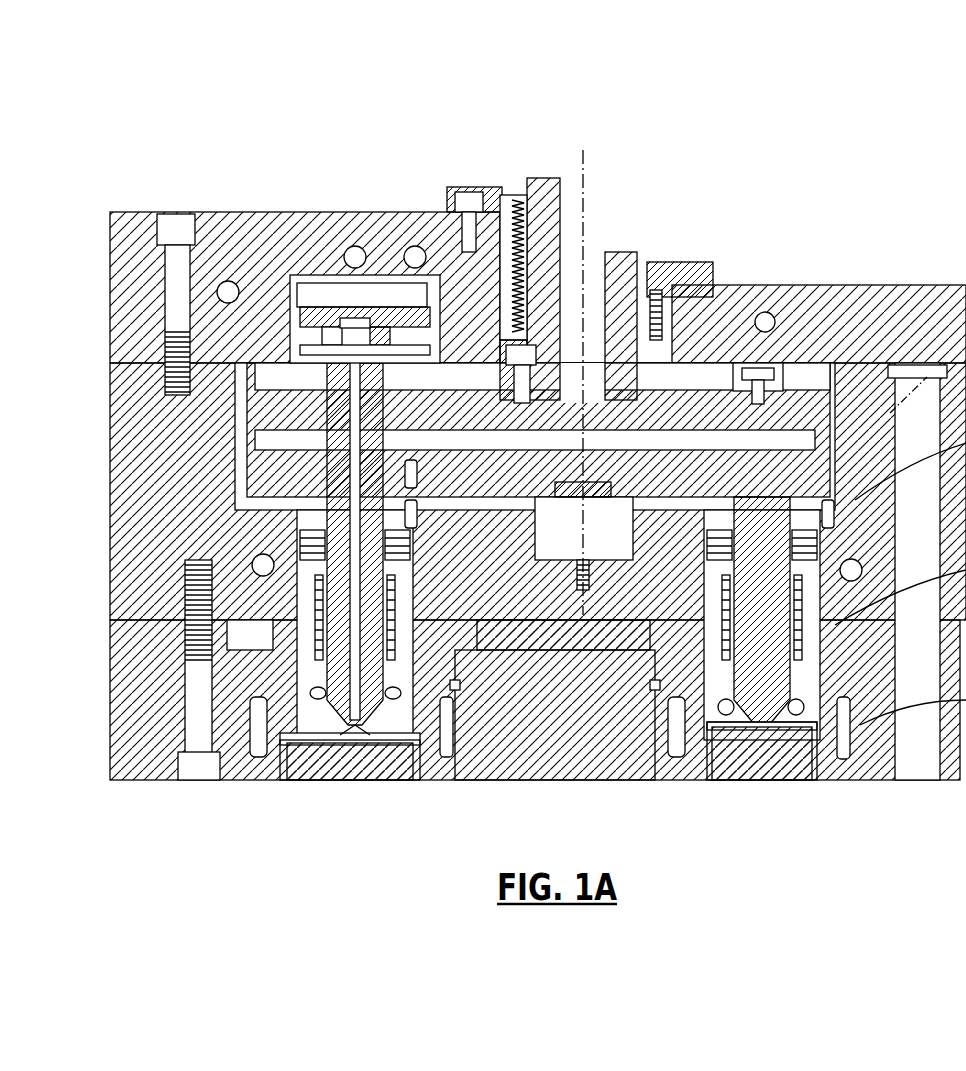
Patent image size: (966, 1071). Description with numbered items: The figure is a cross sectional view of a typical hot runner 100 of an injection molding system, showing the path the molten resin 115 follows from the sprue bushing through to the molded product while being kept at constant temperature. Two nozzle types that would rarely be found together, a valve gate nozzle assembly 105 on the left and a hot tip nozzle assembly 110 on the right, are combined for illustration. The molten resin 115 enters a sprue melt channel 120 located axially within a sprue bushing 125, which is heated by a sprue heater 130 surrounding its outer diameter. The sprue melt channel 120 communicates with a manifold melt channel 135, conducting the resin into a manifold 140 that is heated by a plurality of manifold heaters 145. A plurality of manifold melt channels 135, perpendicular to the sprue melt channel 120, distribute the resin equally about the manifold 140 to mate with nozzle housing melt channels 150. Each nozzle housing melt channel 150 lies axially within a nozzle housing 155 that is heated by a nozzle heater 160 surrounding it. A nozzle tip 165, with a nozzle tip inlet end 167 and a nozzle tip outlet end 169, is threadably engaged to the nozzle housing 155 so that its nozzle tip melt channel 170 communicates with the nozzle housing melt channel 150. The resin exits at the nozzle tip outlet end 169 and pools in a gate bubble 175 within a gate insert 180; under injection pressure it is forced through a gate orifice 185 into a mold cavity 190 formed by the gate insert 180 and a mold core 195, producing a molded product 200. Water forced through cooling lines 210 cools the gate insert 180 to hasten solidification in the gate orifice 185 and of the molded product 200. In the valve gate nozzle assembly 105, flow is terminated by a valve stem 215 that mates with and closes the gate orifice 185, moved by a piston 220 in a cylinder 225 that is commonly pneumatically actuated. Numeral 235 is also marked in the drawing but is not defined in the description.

The hot runner 100 is at (563, 122).
The valve gate nozzle assembly 105 is at (312, 250).
The hot tip nozzle assembly 110 is at (828, 345).
The molten resin 115 is at (592, 262).
The sprue melt channel 120 is at (522, 300).
The sprue bushing 125 is at (532, 183).
The sprue heater 130 is at (510, 192).
The manifold melt channel 135 is at (655, 392).
The manifold 140 is at (492, 396).
The manifold heaters 145 is at (835, 400).
The nozzle housing melt channel 150 is at (300, 540).
The nozzle housing 155 is at (300, 575).
The nozzle heater 160 is at (225, 622).
The nozzle tip 165 is at (385, 570).
The nozzle tip inlet end 167 is at (252, 590).
The nozzle tip outlet end 169 is at (340, 698).
The nozzle tip melt channel 170 is at (430, 624).
The gate bubble 175 is at (405, 710).
The gate insert 180 is at (850, 646).
The gate orifice 185 is at (357, 743).
The mold cavity 190 is at (437, 760).
The mold core 195 is at (318, 770).
The molded product 200 is at (421, 782).
The cooling lines 210 is at (252, 712).
The valve stem 215 is at (362, 600).
The piston 220 is at (387, 317).
The cylinder 225 is at (277, 303).
The nozzle gate 235 is at (752, 738).